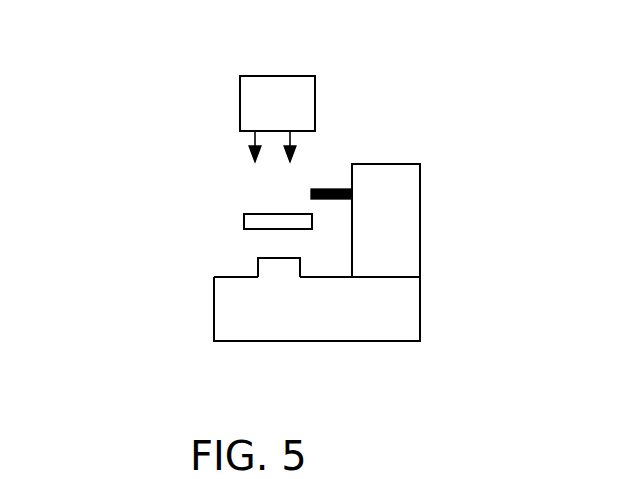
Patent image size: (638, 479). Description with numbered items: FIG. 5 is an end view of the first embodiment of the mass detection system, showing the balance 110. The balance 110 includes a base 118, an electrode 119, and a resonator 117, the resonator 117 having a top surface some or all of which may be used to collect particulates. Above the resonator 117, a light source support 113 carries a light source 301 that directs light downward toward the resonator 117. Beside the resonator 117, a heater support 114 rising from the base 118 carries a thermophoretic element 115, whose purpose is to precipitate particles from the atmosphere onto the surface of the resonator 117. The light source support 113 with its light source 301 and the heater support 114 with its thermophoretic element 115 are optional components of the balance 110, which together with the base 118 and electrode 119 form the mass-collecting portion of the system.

The balance 110 is at (152, 50).
The light source support 113 is at (244, 75).
The light source 301 is at (241, 133).
The heater support 114 is at (421, 229).
The thermophoretic element 115 is at (310, 194).
The resonator 117 is at (243, 222).
The electrode 119 is at (255, 260).
The base 118 is at (258, 343).